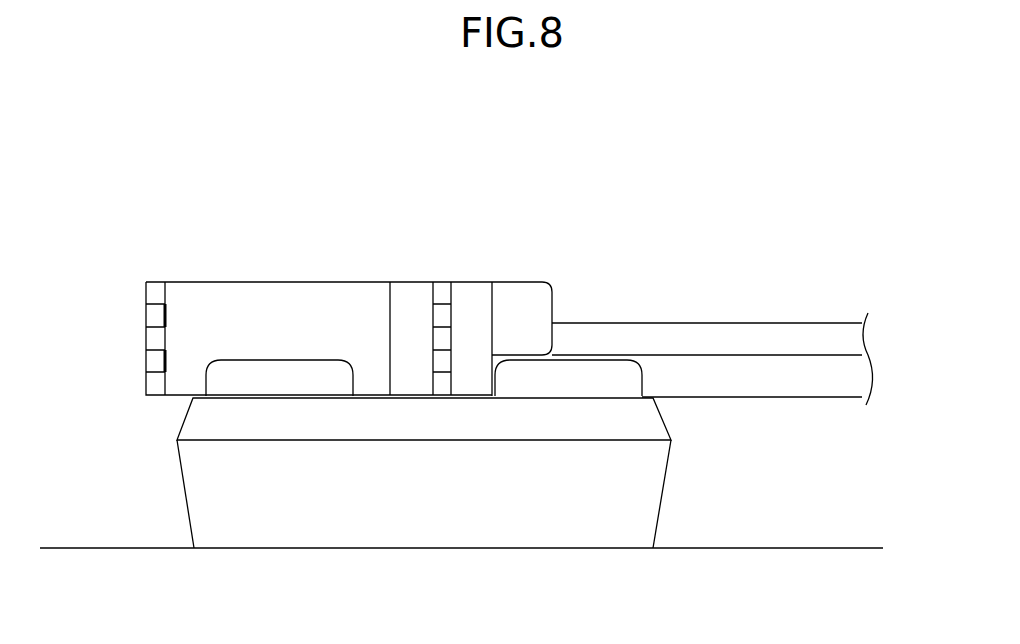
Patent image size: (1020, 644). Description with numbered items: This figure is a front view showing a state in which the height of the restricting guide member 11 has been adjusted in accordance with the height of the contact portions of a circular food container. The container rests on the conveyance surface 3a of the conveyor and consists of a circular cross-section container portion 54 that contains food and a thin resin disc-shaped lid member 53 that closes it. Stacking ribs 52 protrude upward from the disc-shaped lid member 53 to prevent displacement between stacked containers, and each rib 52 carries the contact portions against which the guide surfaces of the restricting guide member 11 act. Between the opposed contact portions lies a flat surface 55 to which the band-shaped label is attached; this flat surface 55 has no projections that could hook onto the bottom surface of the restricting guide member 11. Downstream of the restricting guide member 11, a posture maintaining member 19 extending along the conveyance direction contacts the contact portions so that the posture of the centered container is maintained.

The restricting guide member 11 is at (676, 318).
The posture maintaining member 19 is at (815, 375).
The stacking rib 52 is at (246, 367).
The disc-shaped lid member 53 is at (202, 418).
The circular cross-section container portion 54 is at (300, 523).
The flat surface 55 is at (420, 396).
The conveyance surface 3a is at (772, 548).